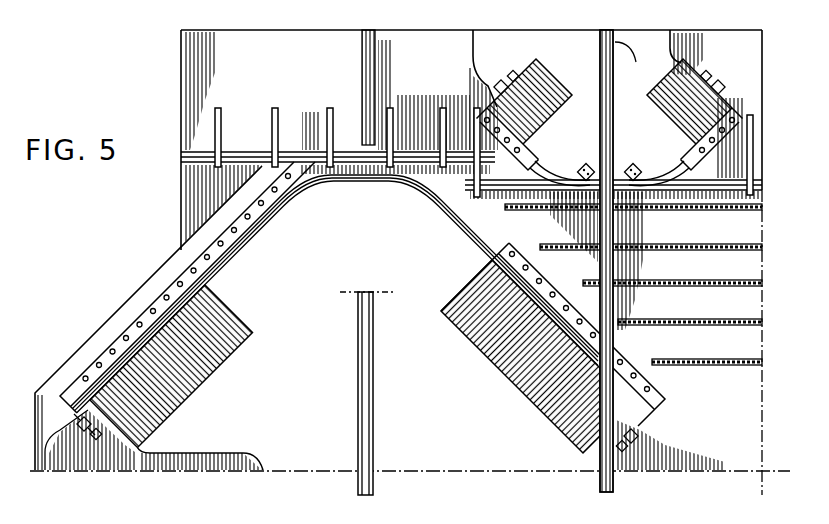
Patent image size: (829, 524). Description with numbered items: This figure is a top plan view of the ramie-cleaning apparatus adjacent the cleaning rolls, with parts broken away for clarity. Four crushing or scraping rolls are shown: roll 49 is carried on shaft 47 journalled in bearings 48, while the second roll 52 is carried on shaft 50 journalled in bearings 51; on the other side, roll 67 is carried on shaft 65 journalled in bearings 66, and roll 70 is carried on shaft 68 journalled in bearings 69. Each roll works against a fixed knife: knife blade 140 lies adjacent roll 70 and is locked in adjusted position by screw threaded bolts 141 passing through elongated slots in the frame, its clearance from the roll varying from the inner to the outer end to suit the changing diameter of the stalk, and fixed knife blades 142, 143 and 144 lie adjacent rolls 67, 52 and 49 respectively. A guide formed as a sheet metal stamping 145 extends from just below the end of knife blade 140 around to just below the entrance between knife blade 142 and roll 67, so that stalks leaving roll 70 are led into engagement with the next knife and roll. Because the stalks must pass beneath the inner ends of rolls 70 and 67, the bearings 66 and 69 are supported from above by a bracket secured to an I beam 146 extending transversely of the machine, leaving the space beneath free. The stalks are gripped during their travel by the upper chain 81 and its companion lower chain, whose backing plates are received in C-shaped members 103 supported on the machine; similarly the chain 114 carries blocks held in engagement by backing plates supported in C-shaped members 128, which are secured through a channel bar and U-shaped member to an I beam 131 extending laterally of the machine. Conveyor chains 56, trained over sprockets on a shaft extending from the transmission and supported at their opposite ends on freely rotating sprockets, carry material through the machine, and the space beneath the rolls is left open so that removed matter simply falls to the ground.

The shaft 47 is at (720, 80).
The bearings 48 is at (712, 85).
The crushing or scraping roll 49 is at (655, 103).
The shaft 50 is at (503, 80).
The bearings 51 is at (517, 72).
The second crushing or scraping roll 52 is at (548, 108).
The conveyor chains 56 is at (697, 247).
The shaft 65 is at (632, 447).
The bearings 66 is at (642, 432).
The crushing or scraping roll 67 is at (522, 378).
The shaft 68 is at (82, 440).
The bearings 69 is at (100, 437).
The crushing or scraping roll 70 is at (200, 380).
The upper chain 81 is at (252, 160).
The C-shaped members 103 is at (330, 112).
The chain 114 is at (680, 189).
The C-shaped members 128 is at (477, 112).
The I beam 131 is at (600, 455).
The fixed knife blade 140 is at (170, 285).
The screw threaded bolts 141 is at (118, 330).
The fixed knife blade 142 is at (527, 254).
The fixed knife blade 143 is at (514, 165).
The fixed knife blade 144 is at (692, 150).
The sheet metal stamping 145 is at (336, 180).
The I beam 146 is at (373, 410).